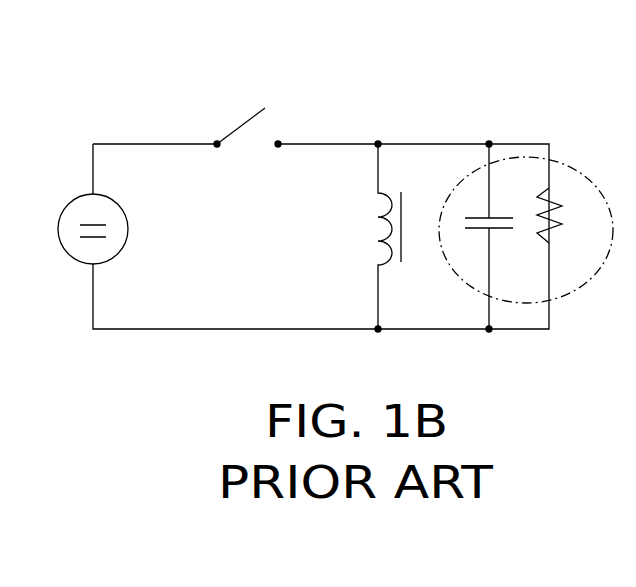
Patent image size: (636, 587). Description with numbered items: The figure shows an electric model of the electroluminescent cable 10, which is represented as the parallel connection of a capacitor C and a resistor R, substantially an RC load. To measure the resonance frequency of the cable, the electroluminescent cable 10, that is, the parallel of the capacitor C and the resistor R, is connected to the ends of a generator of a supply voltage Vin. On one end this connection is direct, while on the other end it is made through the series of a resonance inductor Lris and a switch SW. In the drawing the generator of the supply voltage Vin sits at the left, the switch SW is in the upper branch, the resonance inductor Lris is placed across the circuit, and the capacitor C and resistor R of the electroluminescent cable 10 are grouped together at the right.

The electroluminescent cable 10 is at (526, 171).
The switch SW is at (247, 112).
The supply voltage Vin is at (110, 238).
The resonance inductor Lris is at (349, 236).
The capacitor C is at (485, 236).
The resistor R is at (566, 215).